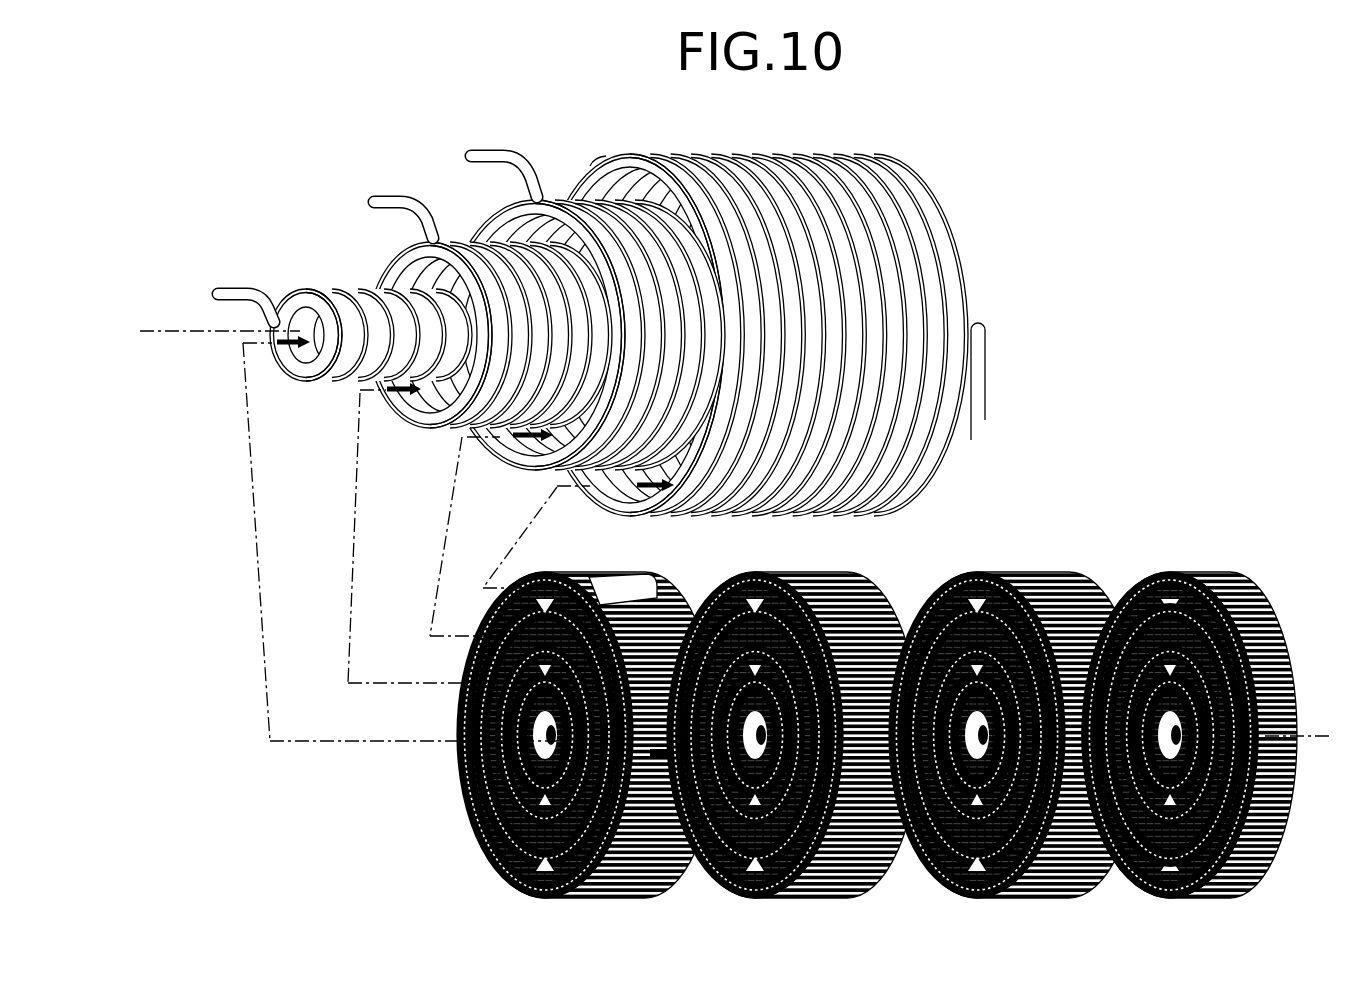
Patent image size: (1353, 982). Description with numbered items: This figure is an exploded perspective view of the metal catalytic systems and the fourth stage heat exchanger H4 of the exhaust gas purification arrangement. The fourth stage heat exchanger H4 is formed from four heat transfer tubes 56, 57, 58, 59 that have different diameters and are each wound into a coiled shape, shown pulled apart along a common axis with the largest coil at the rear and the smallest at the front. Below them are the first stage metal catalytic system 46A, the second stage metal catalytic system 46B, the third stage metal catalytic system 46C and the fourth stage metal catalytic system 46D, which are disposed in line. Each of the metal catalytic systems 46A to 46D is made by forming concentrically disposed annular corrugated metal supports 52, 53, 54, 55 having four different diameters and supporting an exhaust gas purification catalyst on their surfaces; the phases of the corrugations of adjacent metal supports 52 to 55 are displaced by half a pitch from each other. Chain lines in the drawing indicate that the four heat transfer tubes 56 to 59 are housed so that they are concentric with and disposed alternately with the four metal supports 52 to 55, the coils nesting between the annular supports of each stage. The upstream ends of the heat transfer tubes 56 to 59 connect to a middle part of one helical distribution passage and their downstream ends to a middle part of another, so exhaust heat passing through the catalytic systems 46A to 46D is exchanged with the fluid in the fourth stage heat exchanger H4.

The fourth stage heat exchanger H4 is at (643, 332).
The heat transfer tube 56 is at (938, 374).
The heat transfer tube 57 is at (495, 222).
The heat transfer tube 58 is at (397, 252).
The heat transfer tube 59 is at (293, 325).
The first stage metal catalytic system 46A is at (1191, 687).
The second stage metal catalytic system 46B is at (1000, 577).
The third stage metal catalytic system 46C is at (745, 578).
The fourth stage metal catalytic system 46D is at (478, 822).
The annular corrugated metal support 52 is at (1173, 575).
The annular corrugated metal support 53 is at (1108, 603).
The annular corrugated metal support 54 is at (1088, 605).
The annular corrugated metal support 55 is at (1227, 847).